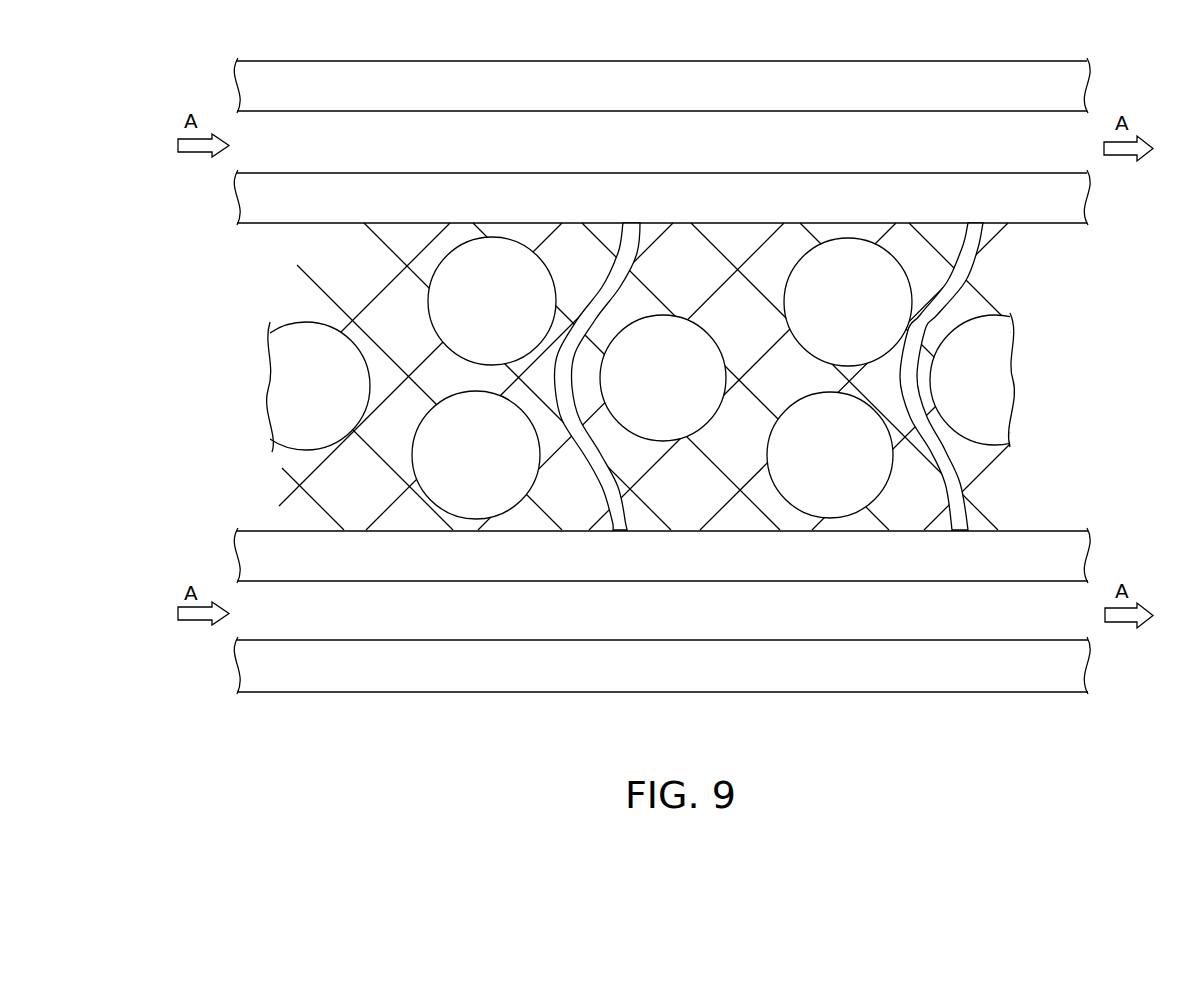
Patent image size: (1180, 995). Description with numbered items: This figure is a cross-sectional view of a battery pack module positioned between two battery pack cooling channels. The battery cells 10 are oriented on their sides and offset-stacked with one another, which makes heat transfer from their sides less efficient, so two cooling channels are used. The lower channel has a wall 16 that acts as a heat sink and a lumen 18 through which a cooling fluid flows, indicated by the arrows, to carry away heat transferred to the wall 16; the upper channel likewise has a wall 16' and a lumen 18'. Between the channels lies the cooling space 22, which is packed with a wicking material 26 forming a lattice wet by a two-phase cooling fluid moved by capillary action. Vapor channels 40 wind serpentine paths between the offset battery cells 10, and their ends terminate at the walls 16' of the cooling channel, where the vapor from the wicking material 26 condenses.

The battery cell 10 is at (319, 394).
The wall of the cooling channel 16 is at (685, 611).
The wall of the cooling channel 16' is at (687, 141).
The lumen of the cooling channel 18 is at (432, 610).
The lumen of the cooling channel 18' is at (434, 143).
The cooling space 22 is at (750, 338).
The wicking material 26 is at (375, 343).
The vapor channel 40 is at (615, 523).